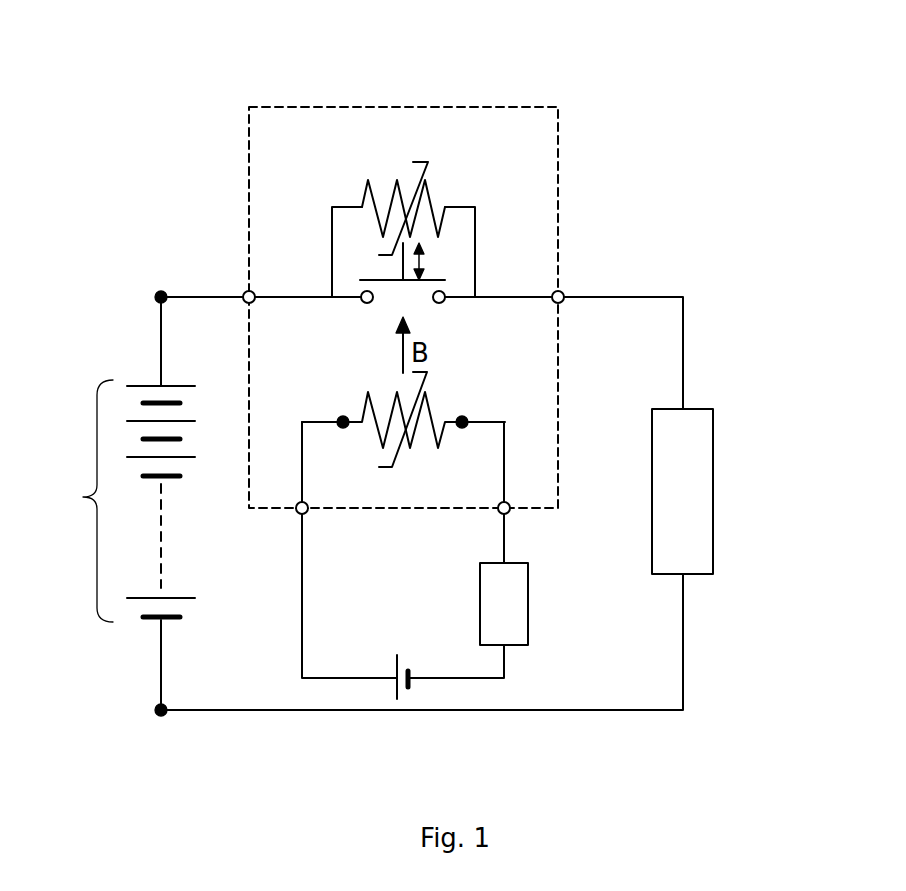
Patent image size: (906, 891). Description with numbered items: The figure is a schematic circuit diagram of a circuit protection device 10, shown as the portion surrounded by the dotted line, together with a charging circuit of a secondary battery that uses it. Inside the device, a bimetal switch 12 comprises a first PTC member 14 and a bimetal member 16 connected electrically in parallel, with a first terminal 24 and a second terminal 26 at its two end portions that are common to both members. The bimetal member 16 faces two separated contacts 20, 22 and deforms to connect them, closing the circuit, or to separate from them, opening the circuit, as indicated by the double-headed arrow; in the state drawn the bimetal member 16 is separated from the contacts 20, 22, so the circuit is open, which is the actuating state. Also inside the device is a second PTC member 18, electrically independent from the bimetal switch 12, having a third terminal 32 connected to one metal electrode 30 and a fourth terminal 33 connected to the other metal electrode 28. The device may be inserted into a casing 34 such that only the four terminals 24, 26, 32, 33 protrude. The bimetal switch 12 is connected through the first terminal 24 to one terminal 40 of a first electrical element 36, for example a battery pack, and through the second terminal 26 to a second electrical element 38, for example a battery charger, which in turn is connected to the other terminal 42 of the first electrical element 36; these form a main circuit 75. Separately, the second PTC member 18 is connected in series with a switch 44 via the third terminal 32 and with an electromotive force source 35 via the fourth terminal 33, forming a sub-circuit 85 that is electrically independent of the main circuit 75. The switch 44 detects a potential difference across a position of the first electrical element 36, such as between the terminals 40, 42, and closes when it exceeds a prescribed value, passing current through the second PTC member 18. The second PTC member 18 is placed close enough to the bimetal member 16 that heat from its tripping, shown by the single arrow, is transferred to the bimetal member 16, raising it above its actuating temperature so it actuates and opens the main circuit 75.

The circuit protection device 10 is at (443, 103).
The bimetal switch 12 is at (533, 160).
The first PTC member 14 is at (413, 165).
The bimetal member 16 is at (437, 278).
The second PTC member 18 is at (410, 400).
The contact 20 is at (363, 303).
The contact 22 is at (443, 303).
The first terminal 24 is at (244, 302).
The second terminal 26 is at (563, 302).
The metal electrode 28 is at (341, 428).
The metal electrode 30 is at (466, 417).
The third terminal 32 is at (509, 504).
The fourth terminal 33 is at (298, 513).
The casing 34 is at (413, 510).
The electromotive force source 35 is at (405, 667).
The first electrical element 36 is at (117, 459).
The second electrical element 38 is at (713, 488).
The terminal 40 is at (161, 290).
The terminal 42 is at (161, 717).
The switch 44 is at (528, 600).
The main circuit 75 is at (592, 713).
The sub-circuit 85 is at (302, 624).